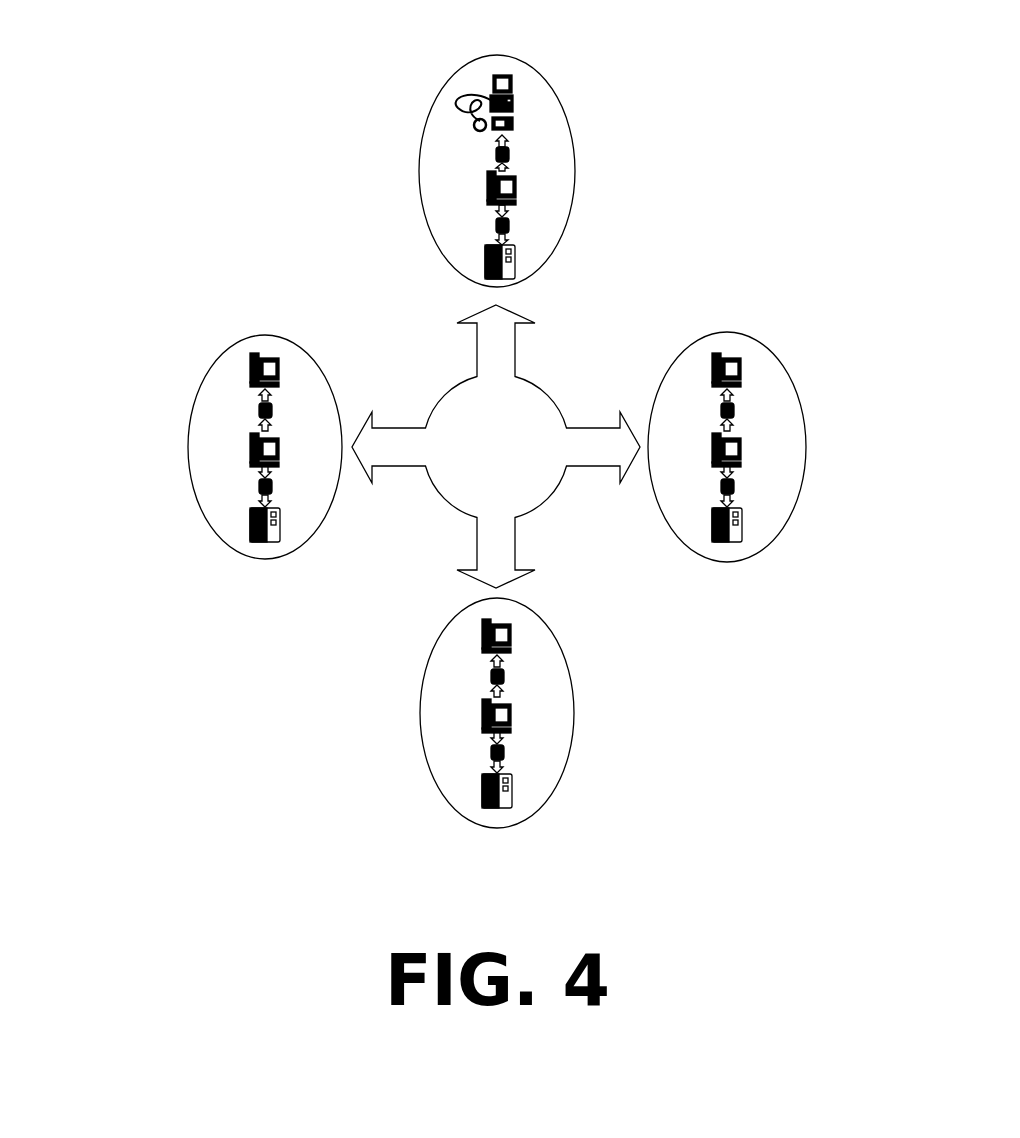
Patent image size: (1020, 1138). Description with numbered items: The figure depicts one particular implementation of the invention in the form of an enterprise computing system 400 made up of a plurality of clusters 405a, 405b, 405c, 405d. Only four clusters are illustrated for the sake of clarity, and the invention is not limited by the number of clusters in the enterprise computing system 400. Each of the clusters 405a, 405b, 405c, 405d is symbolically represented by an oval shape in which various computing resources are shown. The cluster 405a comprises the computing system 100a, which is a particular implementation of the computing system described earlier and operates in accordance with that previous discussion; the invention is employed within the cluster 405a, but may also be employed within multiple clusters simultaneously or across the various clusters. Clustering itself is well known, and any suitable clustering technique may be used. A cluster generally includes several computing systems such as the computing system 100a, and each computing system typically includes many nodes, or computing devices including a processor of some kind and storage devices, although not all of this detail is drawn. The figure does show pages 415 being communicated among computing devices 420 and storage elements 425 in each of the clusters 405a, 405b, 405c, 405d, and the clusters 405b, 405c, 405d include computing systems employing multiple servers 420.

The enterprise computing system 400 is at (178, 29).
The computing system 100a is at (485, 73).
The cluster 405a is at (533, 67).
The cluster 405b is at (767, 350).
The cluster 405c is at (533, 808).
The cluster 405d is at (303, 543).
The pages 415 is at (515, 230).
The computing devices 420 is at (480, 193).
The storage elements 425 is at (523, 257).